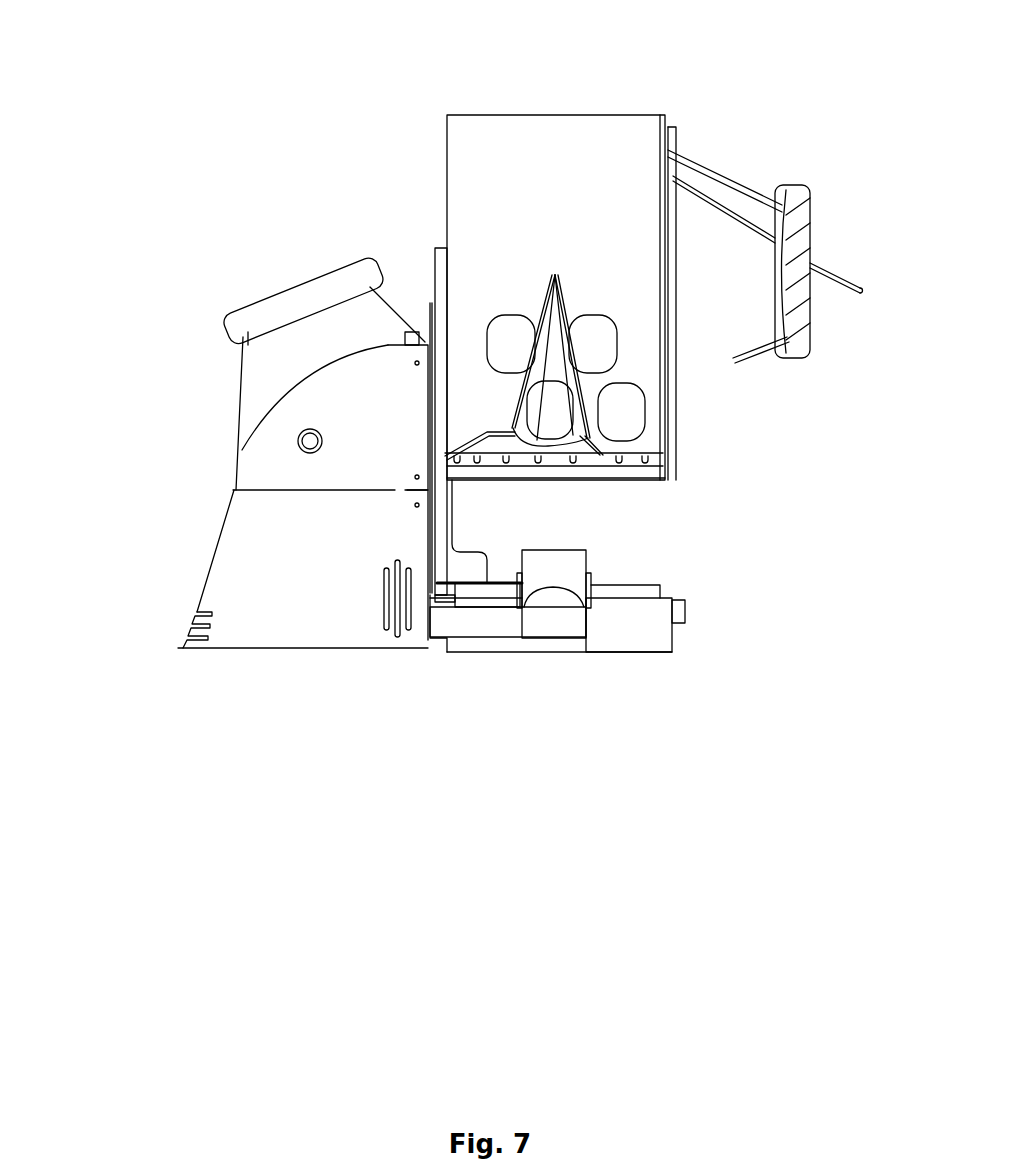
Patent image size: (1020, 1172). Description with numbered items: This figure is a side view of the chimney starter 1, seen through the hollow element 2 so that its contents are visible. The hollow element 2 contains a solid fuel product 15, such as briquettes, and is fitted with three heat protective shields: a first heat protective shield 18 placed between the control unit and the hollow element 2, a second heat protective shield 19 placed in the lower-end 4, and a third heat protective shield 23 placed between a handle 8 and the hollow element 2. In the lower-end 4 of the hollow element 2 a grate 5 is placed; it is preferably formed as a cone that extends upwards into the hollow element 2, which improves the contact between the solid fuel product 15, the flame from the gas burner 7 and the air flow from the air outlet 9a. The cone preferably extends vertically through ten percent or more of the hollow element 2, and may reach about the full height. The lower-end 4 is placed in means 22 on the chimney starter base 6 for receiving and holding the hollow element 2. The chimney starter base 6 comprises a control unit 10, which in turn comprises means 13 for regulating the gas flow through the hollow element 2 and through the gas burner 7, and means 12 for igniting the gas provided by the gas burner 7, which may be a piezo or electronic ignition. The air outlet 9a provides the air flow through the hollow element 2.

The chimney starter 1 is at (180, 85).
The hollow element 2 is at (435, 197).
The lower-end 4 is at (652, 468).
The grate 5 is at (543, 265).
The chimney starter base 6 is at (642, 590).
The gas burner 7 is at (580, 568).
The handle 8 is at (800, 221).
The air outlet 9a is at (548, 540).
The control unit 10 is at (188, 574).
The means for igniting the gas 12 is at (388, 335).
The means for regulating the gas flow 13 is at (278, 440).
The solid fuel product 15 is at (487, 330).
The first heat protective shield 18 is at (418, 276).
The second heat protective shield 19 is at (630, 450).
The means for receiving and/or holding the hollow element 22 is at (431, 573).
The third heat protective shield 23 is at (658, 279).